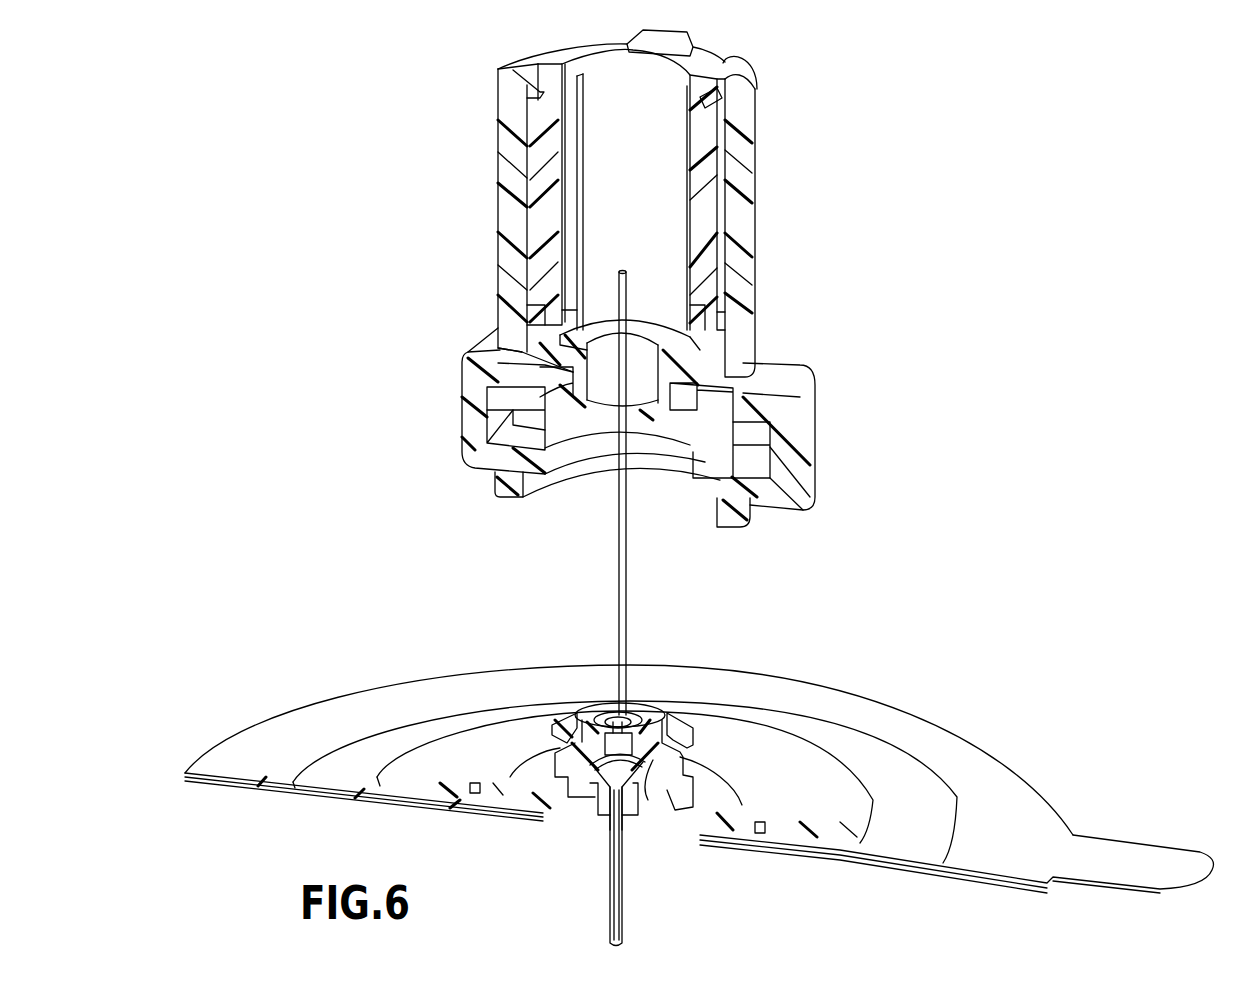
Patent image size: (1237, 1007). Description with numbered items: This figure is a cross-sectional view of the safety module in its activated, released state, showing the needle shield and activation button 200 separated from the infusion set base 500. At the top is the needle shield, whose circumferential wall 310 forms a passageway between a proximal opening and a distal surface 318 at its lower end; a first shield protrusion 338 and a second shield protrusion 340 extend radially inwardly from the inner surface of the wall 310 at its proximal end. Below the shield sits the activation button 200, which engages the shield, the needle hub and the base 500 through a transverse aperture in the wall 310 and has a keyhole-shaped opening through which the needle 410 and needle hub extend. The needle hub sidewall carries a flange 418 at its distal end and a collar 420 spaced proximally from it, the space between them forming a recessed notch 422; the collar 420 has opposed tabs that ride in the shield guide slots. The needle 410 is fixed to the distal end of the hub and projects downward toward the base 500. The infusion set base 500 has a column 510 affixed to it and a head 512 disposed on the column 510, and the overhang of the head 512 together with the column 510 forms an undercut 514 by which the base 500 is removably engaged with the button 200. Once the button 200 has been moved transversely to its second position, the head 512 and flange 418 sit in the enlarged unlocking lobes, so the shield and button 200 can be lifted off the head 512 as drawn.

The activation button 200 is at (465, 447).
The circumferential wall 310 is at (757, 249).
The distal surface 318 is at (745, 505).
The first shield protrusion 338 is at (537, 87).
The second shield protrusion 340 is at (720, 97).
The needle 410 is at (618, 556).
The flange 418 is at (518, 416).
The collar 420 is at (540, 336).
The recessed notch 422 is at (737, 394).
The infusion set base 500 is at (793, 750).
The column 510 is at (693, 795).
The head 512 is at (583, 710).
The undercut 514 is at (540, 750).